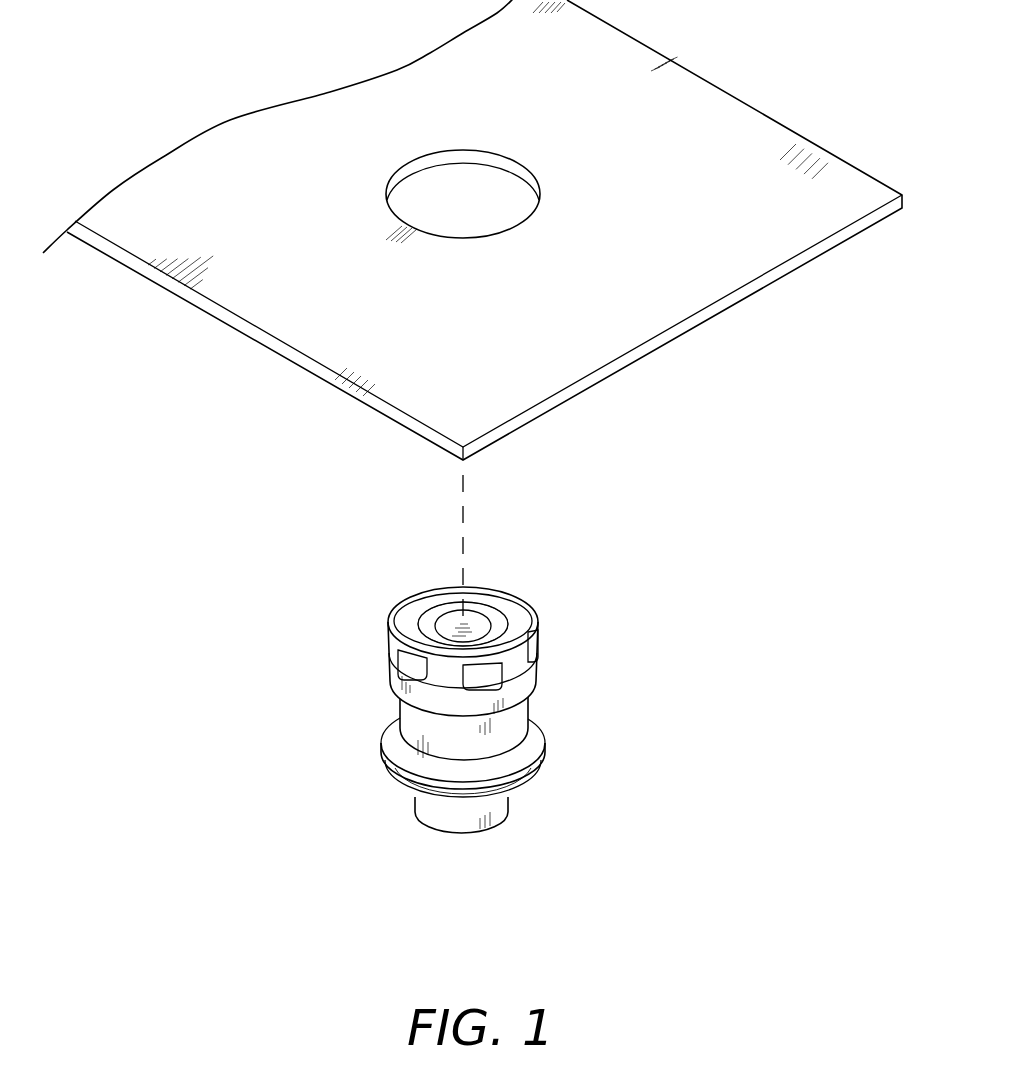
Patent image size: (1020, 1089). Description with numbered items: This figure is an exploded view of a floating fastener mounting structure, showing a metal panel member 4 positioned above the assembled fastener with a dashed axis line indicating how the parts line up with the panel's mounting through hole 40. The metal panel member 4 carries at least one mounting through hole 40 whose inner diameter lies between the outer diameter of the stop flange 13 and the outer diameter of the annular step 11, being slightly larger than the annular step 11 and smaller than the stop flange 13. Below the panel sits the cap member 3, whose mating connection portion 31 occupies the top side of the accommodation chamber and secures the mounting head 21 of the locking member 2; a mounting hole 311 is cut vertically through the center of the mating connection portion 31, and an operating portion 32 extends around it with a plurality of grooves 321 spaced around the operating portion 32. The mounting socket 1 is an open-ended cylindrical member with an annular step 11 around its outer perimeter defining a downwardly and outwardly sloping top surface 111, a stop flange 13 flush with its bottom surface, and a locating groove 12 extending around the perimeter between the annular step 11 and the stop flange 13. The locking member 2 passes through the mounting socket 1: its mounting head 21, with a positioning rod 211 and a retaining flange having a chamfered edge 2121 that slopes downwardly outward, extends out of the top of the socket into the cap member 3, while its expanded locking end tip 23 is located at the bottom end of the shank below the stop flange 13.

The metal panel member 4 is at (692, 88).
The mounting through hole 40 is at (503, 160).
The cap member 3 is at (501, 618).
The mating connection portion 31 is at (496, 610).
The mounting hole 311 is at (498, 622).
The operating portion 32 is at (501, 669).
The grooves 321 is at (537, 658).
The mounting socket 1 is at (496, 773).
The annular step 11 is at (496, 753).
The sloping top surface 111 is at (525, 745).
The stop flange 13 is at (530, 785).
The locating groove 12 is at (511, 787).
The locking member 2 is at (380, 726).
The mounting head 21 is at (380, 610).
The positioning rod 211 is at (452, 618).
The chamfered edge 2121 is at (431, 637).
The expanded locking end tip 23 is at (426, 815).